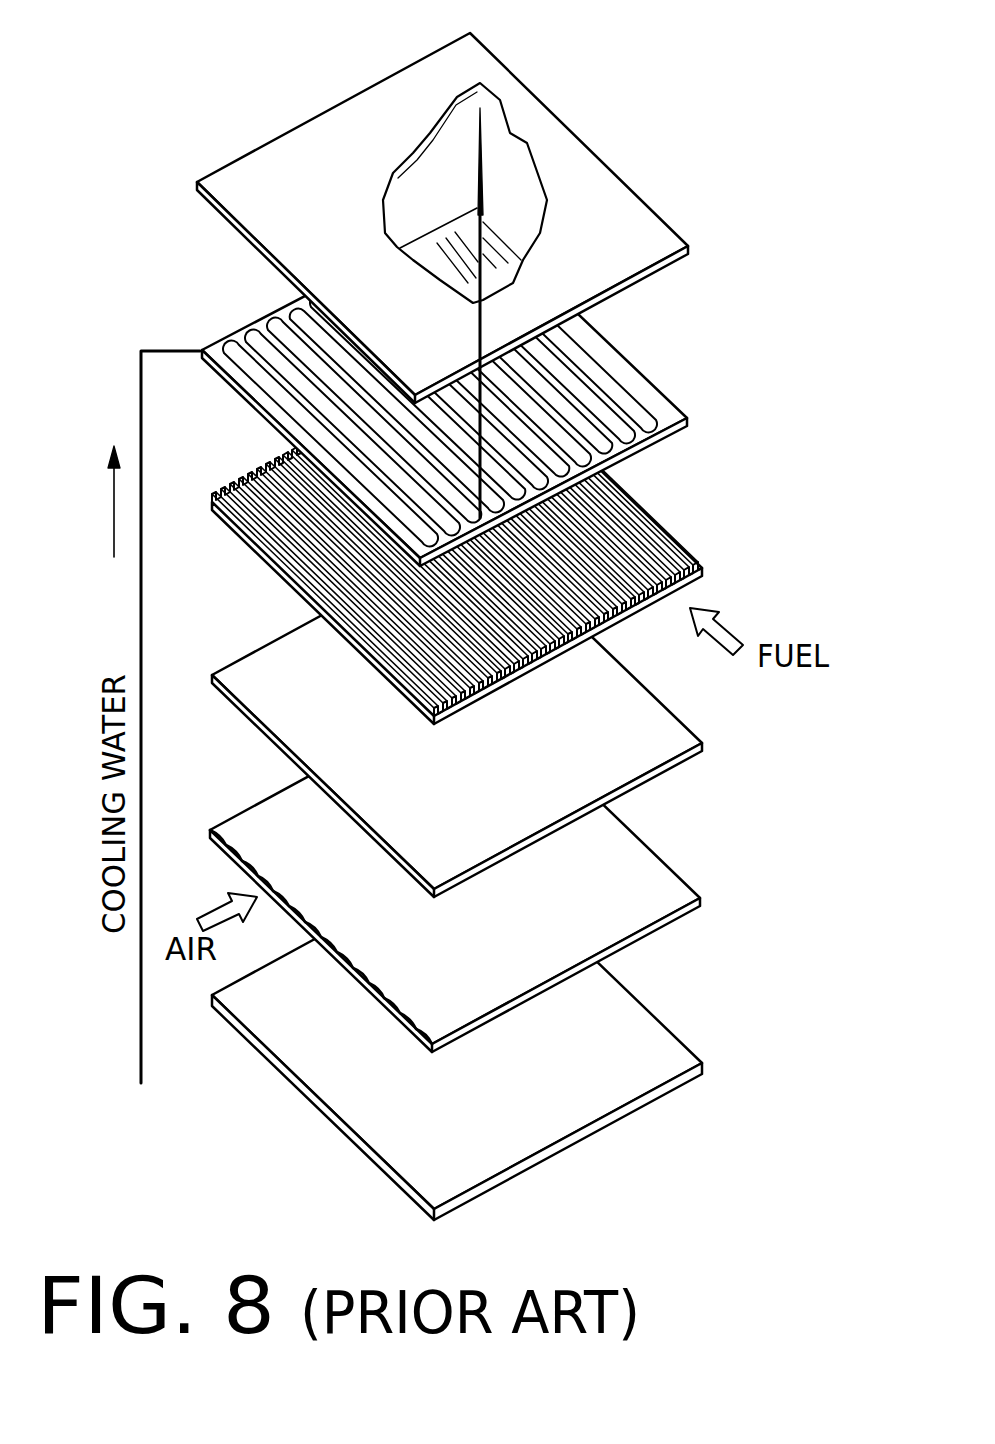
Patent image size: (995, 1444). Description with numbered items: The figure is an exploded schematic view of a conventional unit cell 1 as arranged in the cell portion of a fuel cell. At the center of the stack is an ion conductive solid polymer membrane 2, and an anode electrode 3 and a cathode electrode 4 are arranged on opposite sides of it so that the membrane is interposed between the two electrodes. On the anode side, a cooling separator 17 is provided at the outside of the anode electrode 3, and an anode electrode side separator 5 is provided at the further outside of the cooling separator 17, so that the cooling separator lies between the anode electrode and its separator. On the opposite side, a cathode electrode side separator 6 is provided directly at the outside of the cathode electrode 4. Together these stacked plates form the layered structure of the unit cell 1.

The unit cell 1 is at (372, 25).
The ion conductive solid polymer membrane 2 is at (640, 710).
The anode electrode 3 is at (637, 533).
The cathode electrode 4 is at (635, 863).
The anode electrode side separator 5 is at (613, 205).
The cathode electrode side separator 6 is at (630, 1033).
The cooling separator 17 is at (643, 389).